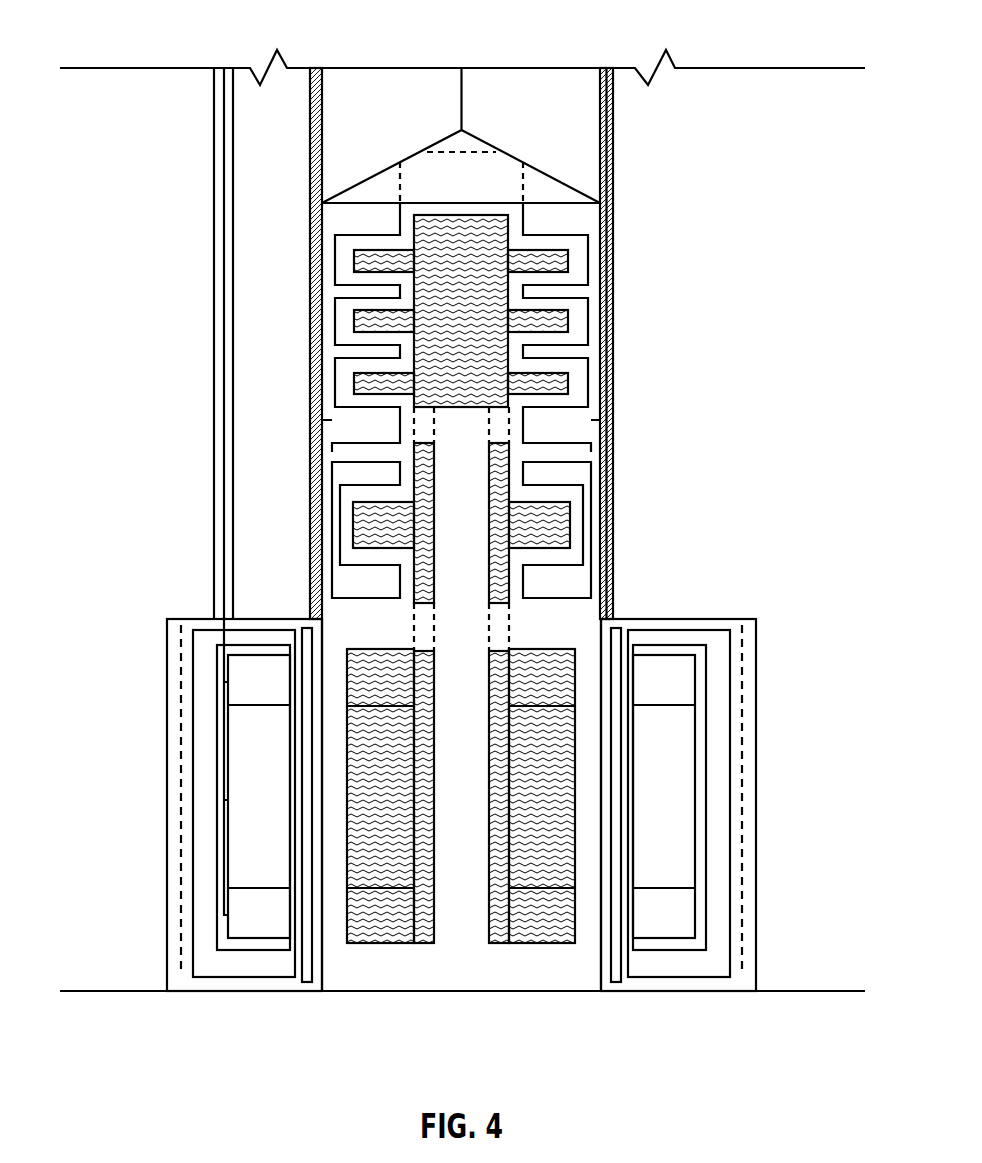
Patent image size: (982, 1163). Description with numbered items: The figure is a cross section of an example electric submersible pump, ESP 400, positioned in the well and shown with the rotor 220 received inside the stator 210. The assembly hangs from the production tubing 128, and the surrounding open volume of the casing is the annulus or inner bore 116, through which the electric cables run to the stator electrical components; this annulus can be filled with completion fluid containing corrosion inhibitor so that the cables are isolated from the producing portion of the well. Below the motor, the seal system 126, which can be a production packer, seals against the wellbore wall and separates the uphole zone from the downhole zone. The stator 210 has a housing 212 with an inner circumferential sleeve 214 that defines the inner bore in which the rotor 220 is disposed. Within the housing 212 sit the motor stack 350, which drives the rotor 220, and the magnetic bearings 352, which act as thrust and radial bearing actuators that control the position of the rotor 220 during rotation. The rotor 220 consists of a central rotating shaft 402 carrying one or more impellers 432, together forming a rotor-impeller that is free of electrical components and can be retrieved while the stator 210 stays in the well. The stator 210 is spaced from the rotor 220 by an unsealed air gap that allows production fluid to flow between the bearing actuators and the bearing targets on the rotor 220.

The inner bore 116 is at (124, 144).
The seal system 126 is at (442, 1056).
The production tubing 128 is at (323, 97).
The stator 210 is at (735, 577).
The housing 212 is at (757, 663).
The inner circumferential sleeve 214 is at (620, 608).
The rotor 220 is at (401, 965).
The motor stack 350 is at (241, 811).
The magnetic bearing 352 is at (241, 696).
The ESP 400 is at (641, 202).
The central rotating shaft 402 is at (497, 942).
The impeller 432 is at (568, 383).